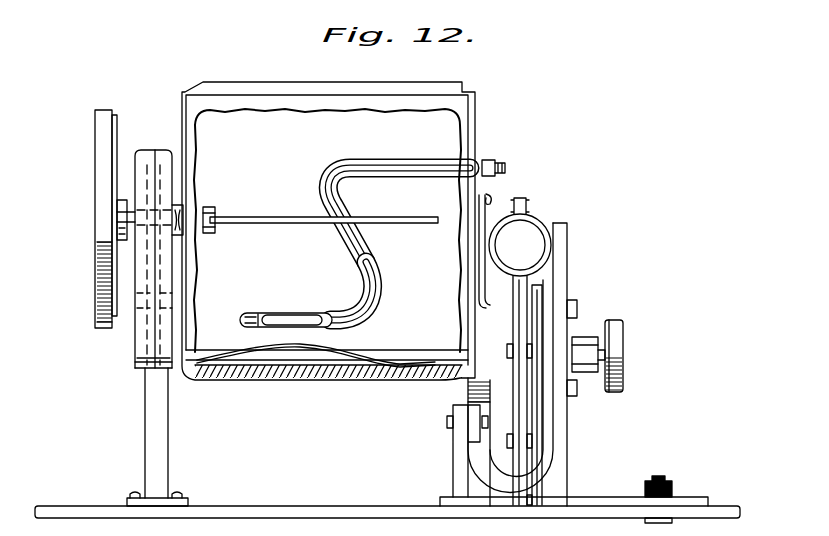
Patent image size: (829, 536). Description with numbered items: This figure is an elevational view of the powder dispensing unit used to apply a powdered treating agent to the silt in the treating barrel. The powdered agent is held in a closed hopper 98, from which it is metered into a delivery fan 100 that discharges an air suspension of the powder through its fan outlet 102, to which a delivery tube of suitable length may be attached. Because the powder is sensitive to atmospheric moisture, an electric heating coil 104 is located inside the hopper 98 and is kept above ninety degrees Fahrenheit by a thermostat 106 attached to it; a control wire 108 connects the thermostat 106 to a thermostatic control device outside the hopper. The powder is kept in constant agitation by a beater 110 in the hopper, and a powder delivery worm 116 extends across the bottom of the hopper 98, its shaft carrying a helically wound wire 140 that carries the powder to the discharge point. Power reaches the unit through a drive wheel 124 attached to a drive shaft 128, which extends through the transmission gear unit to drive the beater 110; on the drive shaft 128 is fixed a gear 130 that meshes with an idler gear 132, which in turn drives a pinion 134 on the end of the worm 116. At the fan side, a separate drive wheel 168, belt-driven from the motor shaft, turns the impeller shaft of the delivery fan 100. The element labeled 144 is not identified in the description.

The hopper 98 is at (245, 82).
The delivery fan 100 is at (540, 293).
The fan outlet 102 is at (527, 228).
The electric heating coil 104 is at (370, 283).
The thermostat 106 is at (290, 317).
The control wire 108 is at (365, 184).
The beater 110 is at (258, 222).
The powder delivery worm 116 is at (421, 347).
The drive wheel 124 is at (95, 165).
The drive shaft 128 is at (97, 233).
The gear 130 is at (158, 160).
The idler gear 132 is at (147, 314).
The pinion 134 is at (140, 368).
The wire 140 is at (340, 345).
The lead wire 144 is at (488, 212).
The drive wheel 168 is at (622, 327).